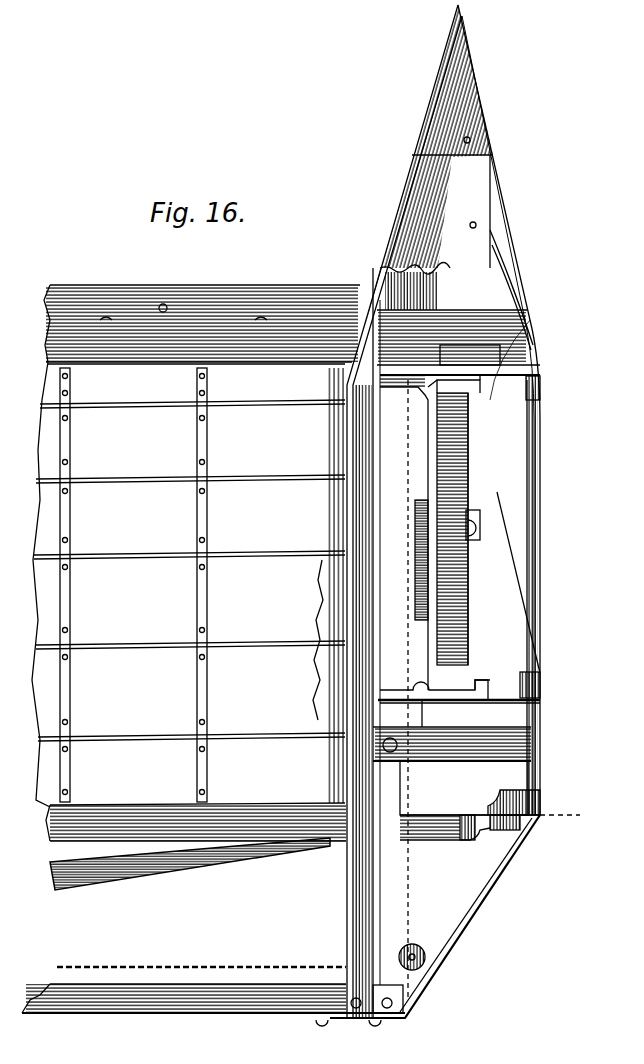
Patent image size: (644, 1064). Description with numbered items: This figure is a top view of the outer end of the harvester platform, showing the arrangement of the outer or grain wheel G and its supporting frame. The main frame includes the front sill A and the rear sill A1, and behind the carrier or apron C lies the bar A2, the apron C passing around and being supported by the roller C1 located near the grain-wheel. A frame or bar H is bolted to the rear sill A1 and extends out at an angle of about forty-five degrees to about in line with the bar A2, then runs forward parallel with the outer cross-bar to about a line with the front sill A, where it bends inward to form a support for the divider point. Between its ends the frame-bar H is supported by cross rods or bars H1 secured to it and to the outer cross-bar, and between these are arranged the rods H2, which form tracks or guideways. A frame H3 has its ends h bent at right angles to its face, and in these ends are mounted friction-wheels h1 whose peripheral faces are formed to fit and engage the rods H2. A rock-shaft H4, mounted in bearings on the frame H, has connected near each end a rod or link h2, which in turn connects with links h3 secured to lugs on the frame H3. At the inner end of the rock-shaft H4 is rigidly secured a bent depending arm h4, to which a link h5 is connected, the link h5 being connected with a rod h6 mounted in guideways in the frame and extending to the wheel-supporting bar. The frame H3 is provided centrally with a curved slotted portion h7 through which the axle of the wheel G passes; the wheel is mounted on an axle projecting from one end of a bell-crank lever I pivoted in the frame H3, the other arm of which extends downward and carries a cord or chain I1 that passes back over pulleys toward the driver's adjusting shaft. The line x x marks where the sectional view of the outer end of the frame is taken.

The front sill A is at (202, 323).
The rear sill A1 is at (209, 996).
The bar A2 is at (50, 832).
The carrier or apron C is at (188, 584).
The roller C1 is at (326, 596).
The outer grain-wheel G is at (462, 522).
The frame or bar H is at (490, 893).
The cross rods or bars H1 is at (456, 535).
The rods H2 is at (406, 383).
The frame H3 is at (427, 456).
The rock-shaft H4 is at (540, 441).
The ends of frame H3 h is at (476, 690).
The friction-wheels h1 is at (470, 354).
The rod or link h2 is at (540, 378).
The links h3 is at (460, 714).
The bent depending arm h4 is at (510, 800).
The link h5 is at (488, 842).
The rod h6 is at (188, 866).
The curved slotted portion h7 is at (420, 505).
The bell-crank lever I is at (418, 550).
The cord or chain I1 is at (425, 955).
The section line x x is at (566, 815).